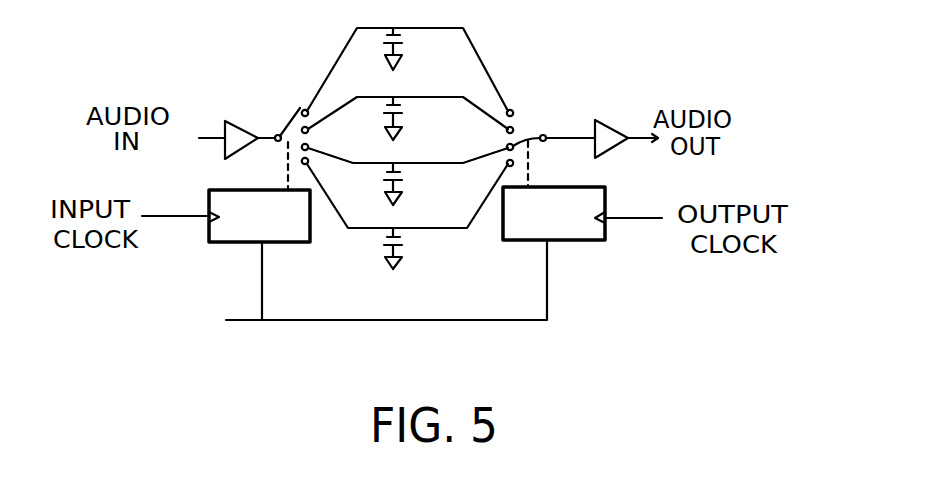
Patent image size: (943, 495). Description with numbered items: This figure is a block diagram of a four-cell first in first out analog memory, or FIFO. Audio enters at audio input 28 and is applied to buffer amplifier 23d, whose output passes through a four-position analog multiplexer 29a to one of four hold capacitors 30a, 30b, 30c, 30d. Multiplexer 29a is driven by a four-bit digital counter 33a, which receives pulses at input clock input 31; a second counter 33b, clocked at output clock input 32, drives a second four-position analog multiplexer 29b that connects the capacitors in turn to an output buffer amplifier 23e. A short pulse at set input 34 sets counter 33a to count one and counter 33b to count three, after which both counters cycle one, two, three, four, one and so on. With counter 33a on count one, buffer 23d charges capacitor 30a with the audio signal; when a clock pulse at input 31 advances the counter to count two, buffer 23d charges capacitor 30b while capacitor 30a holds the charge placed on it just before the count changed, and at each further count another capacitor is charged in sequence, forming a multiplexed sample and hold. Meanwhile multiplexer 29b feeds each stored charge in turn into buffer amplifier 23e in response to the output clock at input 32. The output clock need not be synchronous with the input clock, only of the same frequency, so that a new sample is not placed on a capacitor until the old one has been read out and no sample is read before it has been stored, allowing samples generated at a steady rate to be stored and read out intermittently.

The buffer amplifier 23d is at (237, 120).
The buffer amplifier 23e is at (613, 123).
The audio input 28 is at (207, 148).
The analog multiplexer 29a is at (287, 112).
The analog multiplexer 29b is at (530, 127).
The hold capacitor 30a is at (405, 41).
The hold capacitor 30b is at (406, 113).
The hold capacitor 30c is at (406, 184).
The hold capacitor 30d is at (403, 248).
The input clock input 31 is at (195, 226).
The output clock input 32 is at (615, 211).
The counter 33a is at (248, 248).
The counter 33b is at (526, 243).
The set input 34 is at (238, 327).